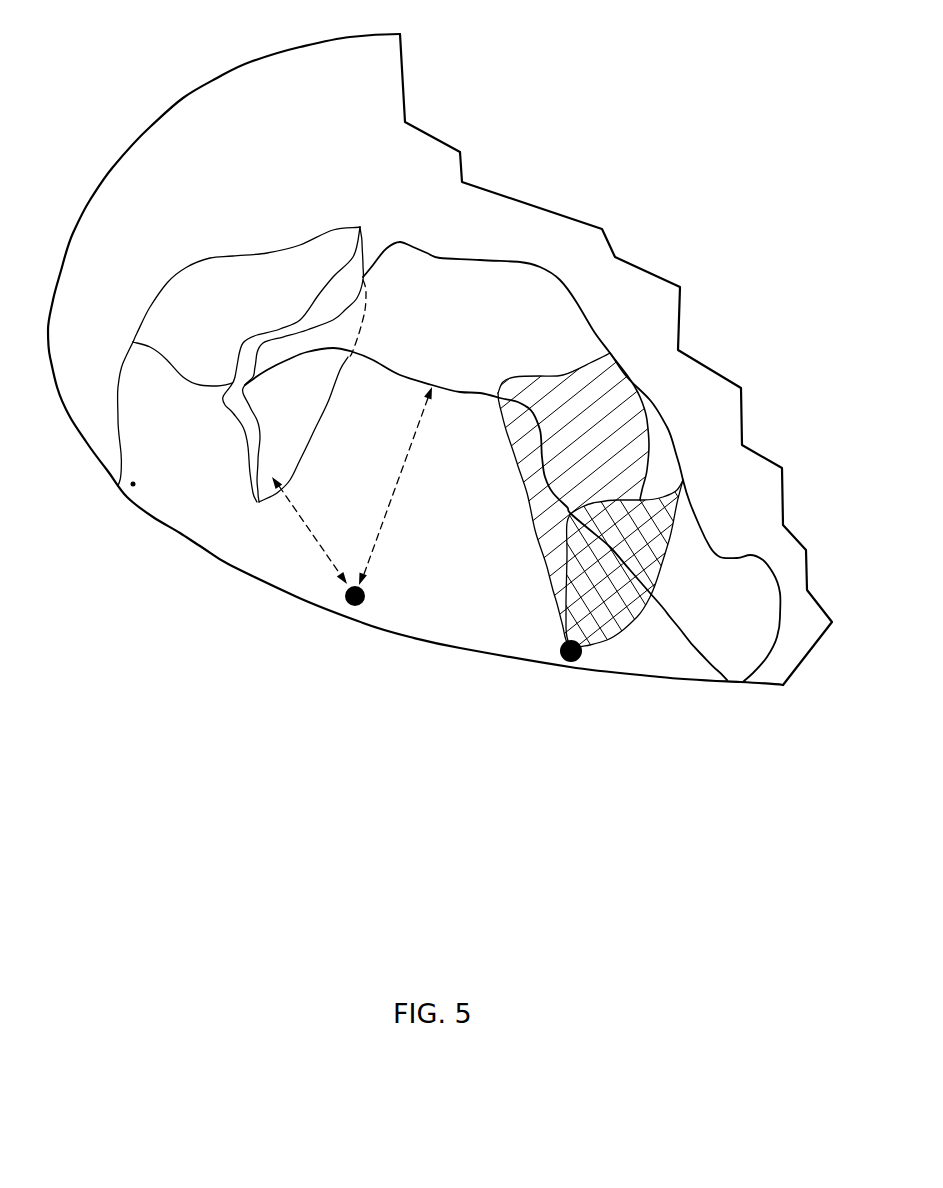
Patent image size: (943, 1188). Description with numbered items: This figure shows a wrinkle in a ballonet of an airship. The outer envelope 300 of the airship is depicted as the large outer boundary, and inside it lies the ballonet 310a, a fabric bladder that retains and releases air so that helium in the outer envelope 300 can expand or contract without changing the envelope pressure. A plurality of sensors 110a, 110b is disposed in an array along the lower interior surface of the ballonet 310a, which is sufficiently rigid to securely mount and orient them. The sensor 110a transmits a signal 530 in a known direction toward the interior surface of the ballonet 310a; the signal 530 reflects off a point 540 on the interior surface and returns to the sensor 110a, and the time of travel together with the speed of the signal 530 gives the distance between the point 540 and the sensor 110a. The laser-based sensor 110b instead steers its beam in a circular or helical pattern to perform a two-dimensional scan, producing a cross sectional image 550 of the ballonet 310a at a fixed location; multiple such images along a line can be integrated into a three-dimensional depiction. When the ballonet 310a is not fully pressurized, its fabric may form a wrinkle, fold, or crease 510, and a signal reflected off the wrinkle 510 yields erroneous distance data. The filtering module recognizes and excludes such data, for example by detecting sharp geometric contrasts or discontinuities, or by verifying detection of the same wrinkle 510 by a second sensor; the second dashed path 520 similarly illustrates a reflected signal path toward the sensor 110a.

The outer envelope 300 is at (218, 64).
The ballonet 310a is at (133, 484).
The wrinkle, fold, or crease 510 is at (240, 503).
The first trajectory 520 is at (285, 526).
The signal 530 is at (388, 542).
The point on the interior surface 540 is at (448, 371).
The cross sectional image 550 is at (616, 606).
The sensor 110a is at (347, 620).
The laser-based sensor 110b is at (566, 675).